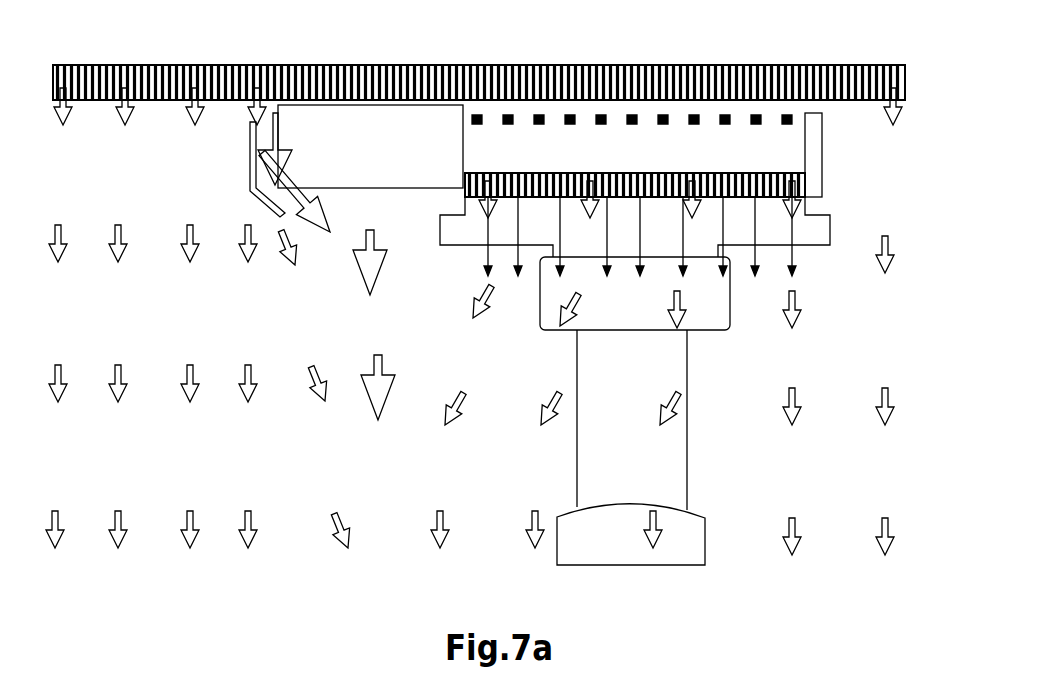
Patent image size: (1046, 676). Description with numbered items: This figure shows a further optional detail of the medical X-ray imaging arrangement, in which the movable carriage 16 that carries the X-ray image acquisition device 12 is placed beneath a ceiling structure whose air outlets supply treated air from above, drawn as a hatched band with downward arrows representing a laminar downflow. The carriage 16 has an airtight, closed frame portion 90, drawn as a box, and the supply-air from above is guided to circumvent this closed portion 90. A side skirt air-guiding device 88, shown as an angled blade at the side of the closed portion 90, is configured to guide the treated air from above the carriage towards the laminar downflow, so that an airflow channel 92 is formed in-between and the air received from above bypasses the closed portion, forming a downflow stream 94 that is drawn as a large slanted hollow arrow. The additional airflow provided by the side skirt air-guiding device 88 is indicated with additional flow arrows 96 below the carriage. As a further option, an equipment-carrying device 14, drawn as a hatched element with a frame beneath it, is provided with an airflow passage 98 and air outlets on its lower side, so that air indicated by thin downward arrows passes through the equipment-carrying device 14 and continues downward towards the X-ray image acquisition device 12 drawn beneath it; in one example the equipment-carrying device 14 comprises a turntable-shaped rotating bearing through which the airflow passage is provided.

The X-ray image acquisition device 12 is at (723, 307).
The equipment-carrying device 14 is at (823, 237).
The movable carriage 16 is at (823, 168).
The side skirt air-guiding device 88 is at (250, 166).
The closed frame portion 90 is at (358, 178).
The airflow channel 92 is at (270, 133).
The downflow stream 94 is at (293, 217).
The additional flow arrows 96 is at (392, 370).
The airflow passage 98 is at (520, 218).